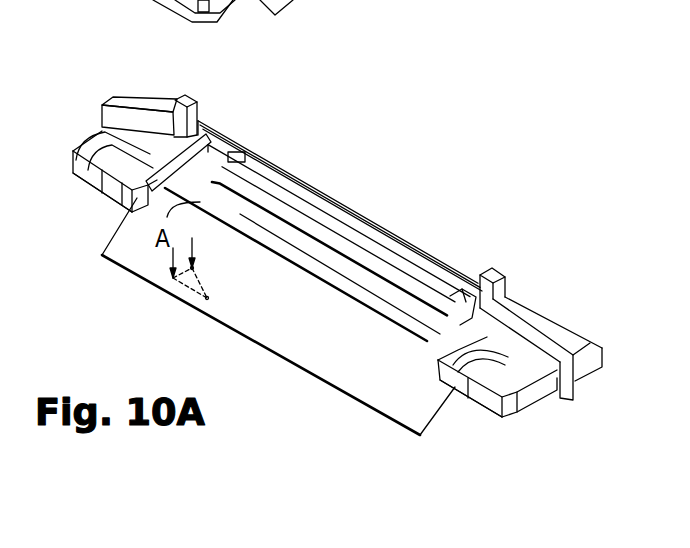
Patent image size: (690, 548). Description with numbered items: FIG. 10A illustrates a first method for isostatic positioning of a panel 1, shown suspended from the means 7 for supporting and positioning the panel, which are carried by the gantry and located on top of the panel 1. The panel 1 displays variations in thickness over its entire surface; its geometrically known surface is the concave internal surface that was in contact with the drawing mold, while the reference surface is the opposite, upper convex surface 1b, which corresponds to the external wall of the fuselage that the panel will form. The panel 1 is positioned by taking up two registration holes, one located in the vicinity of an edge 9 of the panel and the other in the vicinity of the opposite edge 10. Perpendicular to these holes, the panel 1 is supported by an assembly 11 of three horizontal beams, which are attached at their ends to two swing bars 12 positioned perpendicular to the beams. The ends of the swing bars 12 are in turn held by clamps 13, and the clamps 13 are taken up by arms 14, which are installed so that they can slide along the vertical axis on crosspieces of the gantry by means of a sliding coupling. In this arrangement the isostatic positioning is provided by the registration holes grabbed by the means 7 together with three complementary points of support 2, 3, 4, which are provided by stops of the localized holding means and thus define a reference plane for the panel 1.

The panel 1 is at (396, 301).
The upper convex surface 1b is at (287, 323).
The point of support 2 is at (172, 320).
The point of support 3 is at (125, 276).
The point of support 4 is at (235, 272).
The means for supporting and positioning the panel 7 is at (620, 352).
The edge of the panel 9 is at (120, 220).
The opposite edge 10 is at (441, 420).
The assembly of three horizontal beams 11 is at (314, 227).
The swing bar 12 is at (85, 183).
The clamp 13 is at (90, 142).
The arm 14 is at (129, 105).